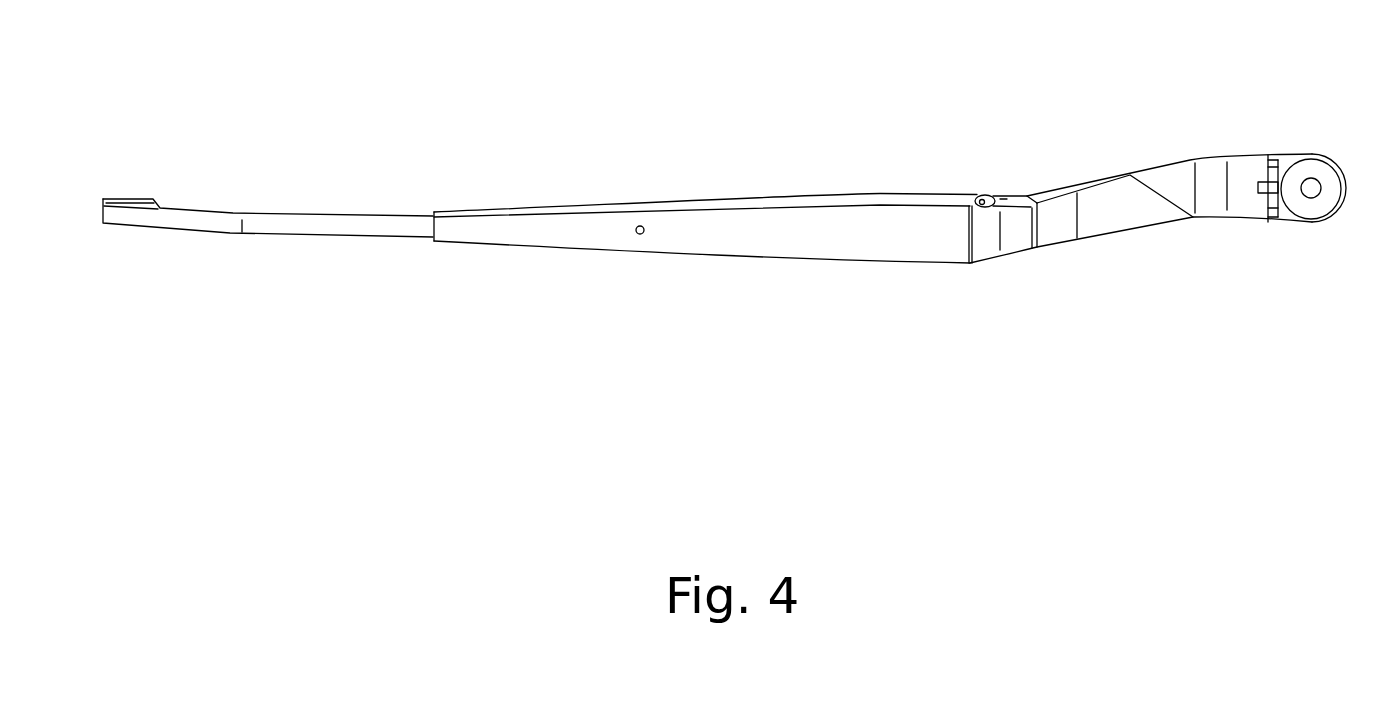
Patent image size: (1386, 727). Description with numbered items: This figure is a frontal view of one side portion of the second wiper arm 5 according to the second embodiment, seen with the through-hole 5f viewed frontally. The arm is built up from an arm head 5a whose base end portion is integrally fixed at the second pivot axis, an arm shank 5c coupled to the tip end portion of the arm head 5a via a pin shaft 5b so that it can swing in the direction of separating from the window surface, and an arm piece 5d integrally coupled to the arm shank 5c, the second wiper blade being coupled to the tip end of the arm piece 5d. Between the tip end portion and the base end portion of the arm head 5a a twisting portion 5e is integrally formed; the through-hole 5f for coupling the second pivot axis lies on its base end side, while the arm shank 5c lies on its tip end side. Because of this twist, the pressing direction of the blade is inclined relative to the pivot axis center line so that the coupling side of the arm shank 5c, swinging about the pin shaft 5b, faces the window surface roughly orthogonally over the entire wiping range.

The second wiper arm 5 is at (1022, 130).
The arm head 5a is at (1213, 218).
The pin shaft 5b is at (978, 193).
The arm shank 5c is at (782, 227).
The arm piece 5d is at (347, 226).
The twisting portion 5e is at (1157, 185).
The through-hole 5f is at (1313, 182).